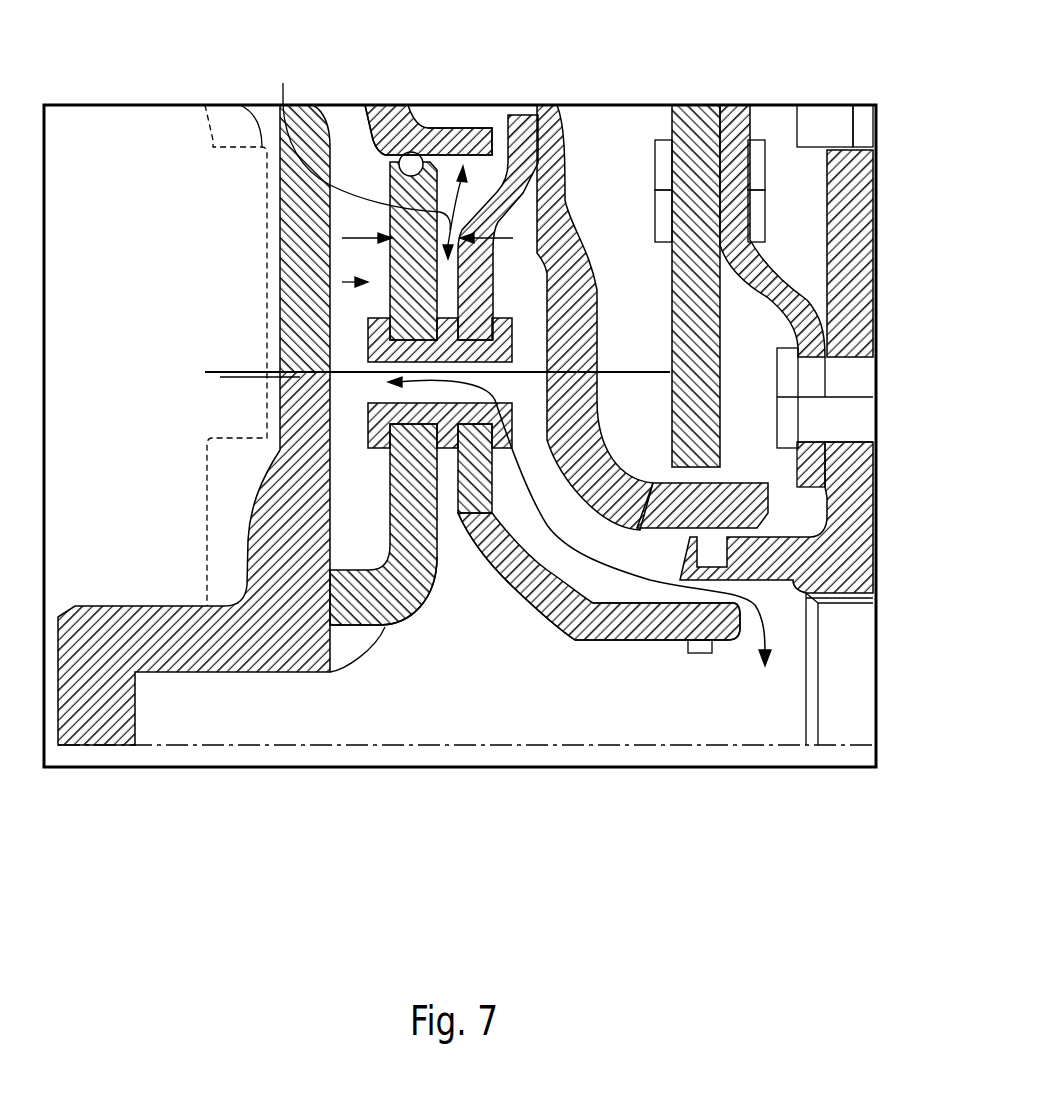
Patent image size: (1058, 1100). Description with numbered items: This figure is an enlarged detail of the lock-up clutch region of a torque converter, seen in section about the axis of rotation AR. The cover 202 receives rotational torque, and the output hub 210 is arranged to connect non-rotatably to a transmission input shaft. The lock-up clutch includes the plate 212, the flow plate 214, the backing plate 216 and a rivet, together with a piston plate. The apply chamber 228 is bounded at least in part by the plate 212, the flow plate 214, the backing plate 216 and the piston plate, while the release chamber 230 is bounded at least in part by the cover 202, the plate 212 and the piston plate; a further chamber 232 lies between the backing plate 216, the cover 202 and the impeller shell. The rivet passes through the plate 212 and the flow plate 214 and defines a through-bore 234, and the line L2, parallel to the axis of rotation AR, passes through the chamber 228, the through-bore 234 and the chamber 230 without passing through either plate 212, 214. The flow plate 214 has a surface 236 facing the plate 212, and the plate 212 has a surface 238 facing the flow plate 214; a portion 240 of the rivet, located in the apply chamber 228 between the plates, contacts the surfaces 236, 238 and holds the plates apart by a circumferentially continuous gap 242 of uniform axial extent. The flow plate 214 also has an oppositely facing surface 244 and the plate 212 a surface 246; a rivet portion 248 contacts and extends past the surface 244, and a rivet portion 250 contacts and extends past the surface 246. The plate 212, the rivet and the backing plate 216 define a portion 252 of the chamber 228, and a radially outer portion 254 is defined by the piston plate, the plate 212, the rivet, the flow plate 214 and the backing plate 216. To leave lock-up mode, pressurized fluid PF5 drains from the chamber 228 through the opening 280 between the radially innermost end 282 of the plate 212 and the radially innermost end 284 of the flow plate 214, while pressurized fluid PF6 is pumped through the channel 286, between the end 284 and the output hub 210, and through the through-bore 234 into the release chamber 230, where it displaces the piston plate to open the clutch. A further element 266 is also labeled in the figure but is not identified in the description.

The cover 202 is at (297, 177).
The output hub 210 is at (800, 562).
The plate 212 is at (390, 640).
The flow plate 214 is at (604, 652).
The backing plate 216 is at (785, 497).
The apply chamber 228 is at (463, 104).
The release chamber 230 is at (333, 280).
The chamber 232 is at (635, 130).
The through-bore 234 is at (380, 390).
The surface 236 is at (627, 547).
The surface 238 is at (437, 497).
The portion 240 is at (520, 517).
The gap 242 is at (447, 212).
The surface 244 is at (497, 473).
The surface 246 is at (330, 525).
The portion 248 is at (502, 305).
The portion 250 is at (368, 330).
The portion 252 is at (447, 473).
The portion 254 is at (430, 113).
The arm 266 is at (477, 132).
The opening 280 is at (458, 570).
The radially innermost end 282 is at (350, 588).
The radially innermost end 284 is at (517, 570).
The channel 286 is at (670, 480).
The line L2 is at (250, 372).
The pressurized fluid PF5 is at (361, 161).
The pressurized fluid PF6 is at (760, 635).
The axis of rotation AR is at (838, 745).